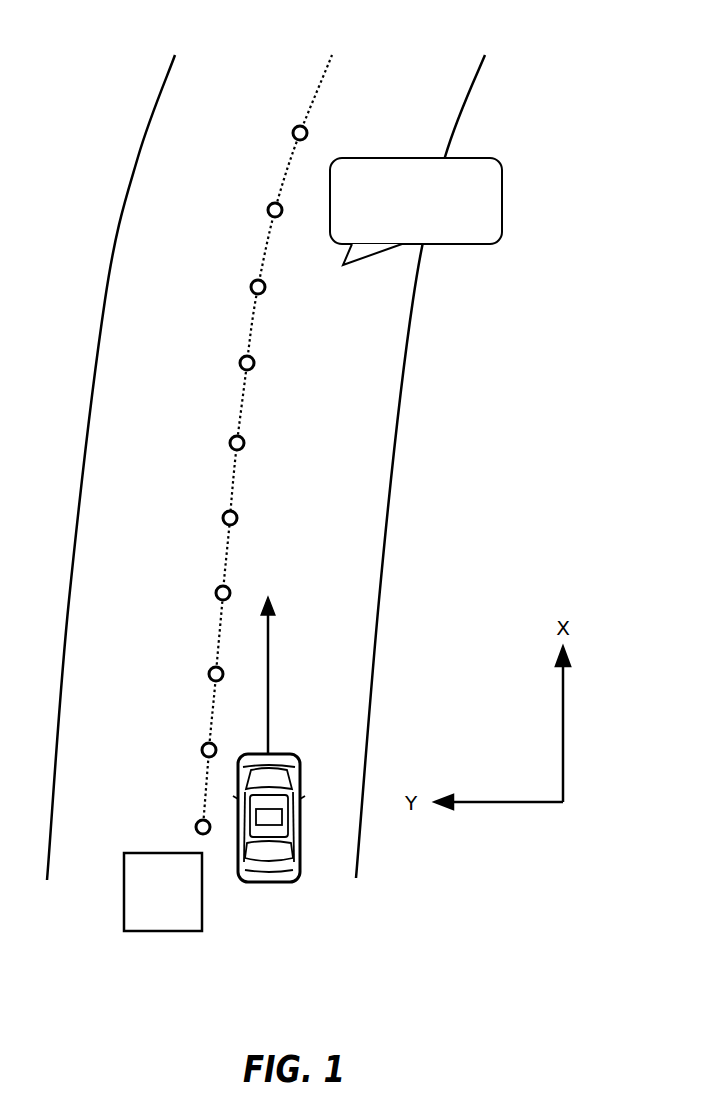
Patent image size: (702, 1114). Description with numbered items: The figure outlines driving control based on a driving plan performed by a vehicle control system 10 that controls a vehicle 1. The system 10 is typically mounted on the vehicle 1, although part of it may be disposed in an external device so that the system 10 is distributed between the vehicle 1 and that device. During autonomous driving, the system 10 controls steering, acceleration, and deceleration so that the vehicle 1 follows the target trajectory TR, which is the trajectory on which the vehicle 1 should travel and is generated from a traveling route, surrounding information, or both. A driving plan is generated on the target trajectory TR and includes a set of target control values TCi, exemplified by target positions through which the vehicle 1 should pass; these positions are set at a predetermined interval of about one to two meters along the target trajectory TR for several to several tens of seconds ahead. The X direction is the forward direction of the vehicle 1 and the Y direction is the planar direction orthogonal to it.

The vehicle 1 is at (268, 883).
The vehicle control system 10 is at (263, 834).
The target trajectory TR is at (334, 420).
The target control values TCi is at (416, 211).